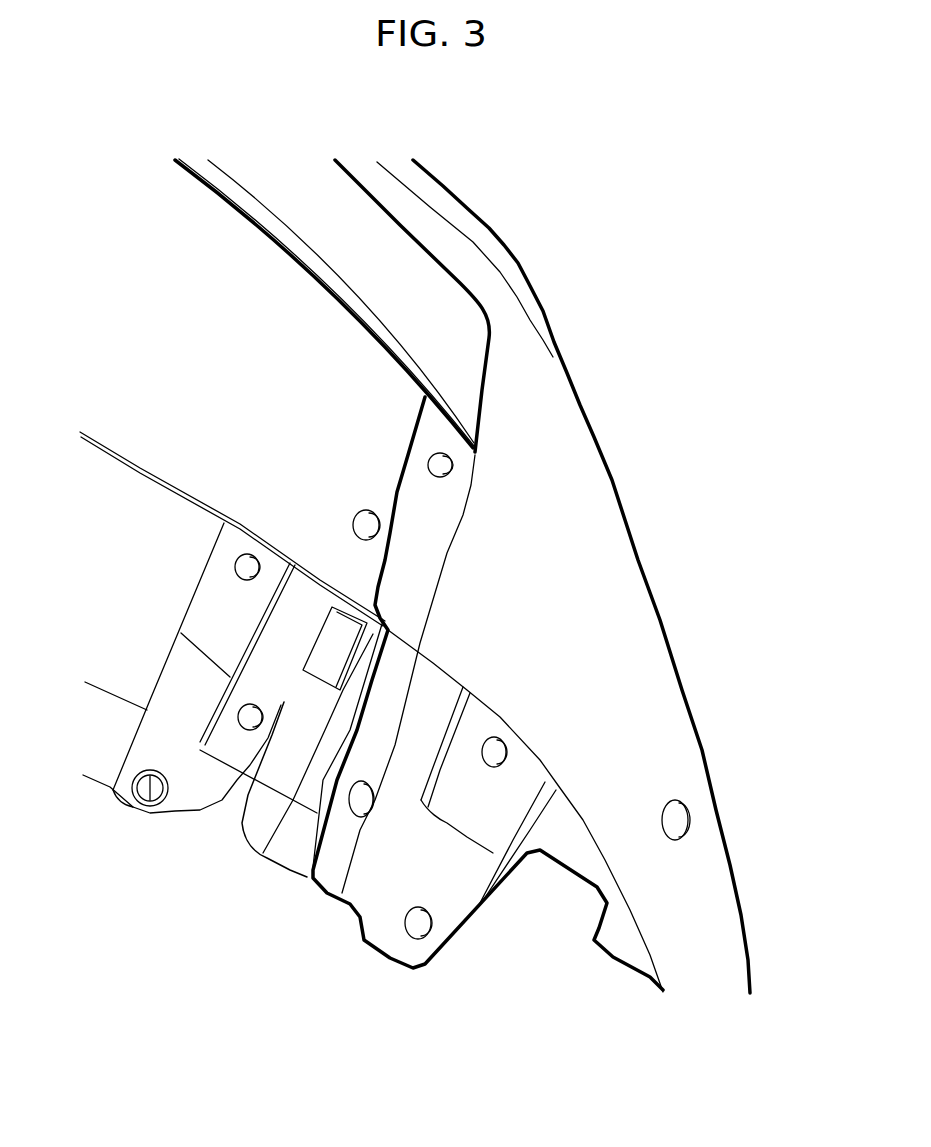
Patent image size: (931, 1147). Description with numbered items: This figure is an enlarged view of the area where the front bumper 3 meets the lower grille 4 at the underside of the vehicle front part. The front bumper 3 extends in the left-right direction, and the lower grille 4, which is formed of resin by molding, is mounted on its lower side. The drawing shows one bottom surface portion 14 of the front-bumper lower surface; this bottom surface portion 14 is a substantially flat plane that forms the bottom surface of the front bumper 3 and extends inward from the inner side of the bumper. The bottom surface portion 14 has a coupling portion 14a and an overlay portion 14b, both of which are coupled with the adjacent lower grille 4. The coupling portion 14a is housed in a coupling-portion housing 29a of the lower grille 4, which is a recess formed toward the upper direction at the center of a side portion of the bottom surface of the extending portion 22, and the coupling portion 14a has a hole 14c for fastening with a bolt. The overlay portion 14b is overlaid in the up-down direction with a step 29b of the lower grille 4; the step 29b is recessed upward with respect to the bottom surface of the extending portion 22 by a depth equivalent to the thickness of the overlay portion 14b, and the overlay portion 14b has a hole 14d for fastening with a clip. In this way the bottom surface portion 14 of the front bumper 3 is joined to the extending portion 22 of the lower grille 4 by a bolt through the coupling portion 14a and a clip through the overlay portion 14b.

The front bumper 3 is at (707, 748).
The lower grille 4 is at (290, 313).
The extending portion 22 is at (277, 437).
The bottom surface portion 14 is at (555, 694).
The coupling portion 14a is at (423, 528).
The coupling-portion housing 29a is at (534, 674).
The overlay portion 14b is at (387, 730).
The step 29b is at (590, 741).
The hole 14c is at (450, 468).
The hole 14d is at (433, 802).